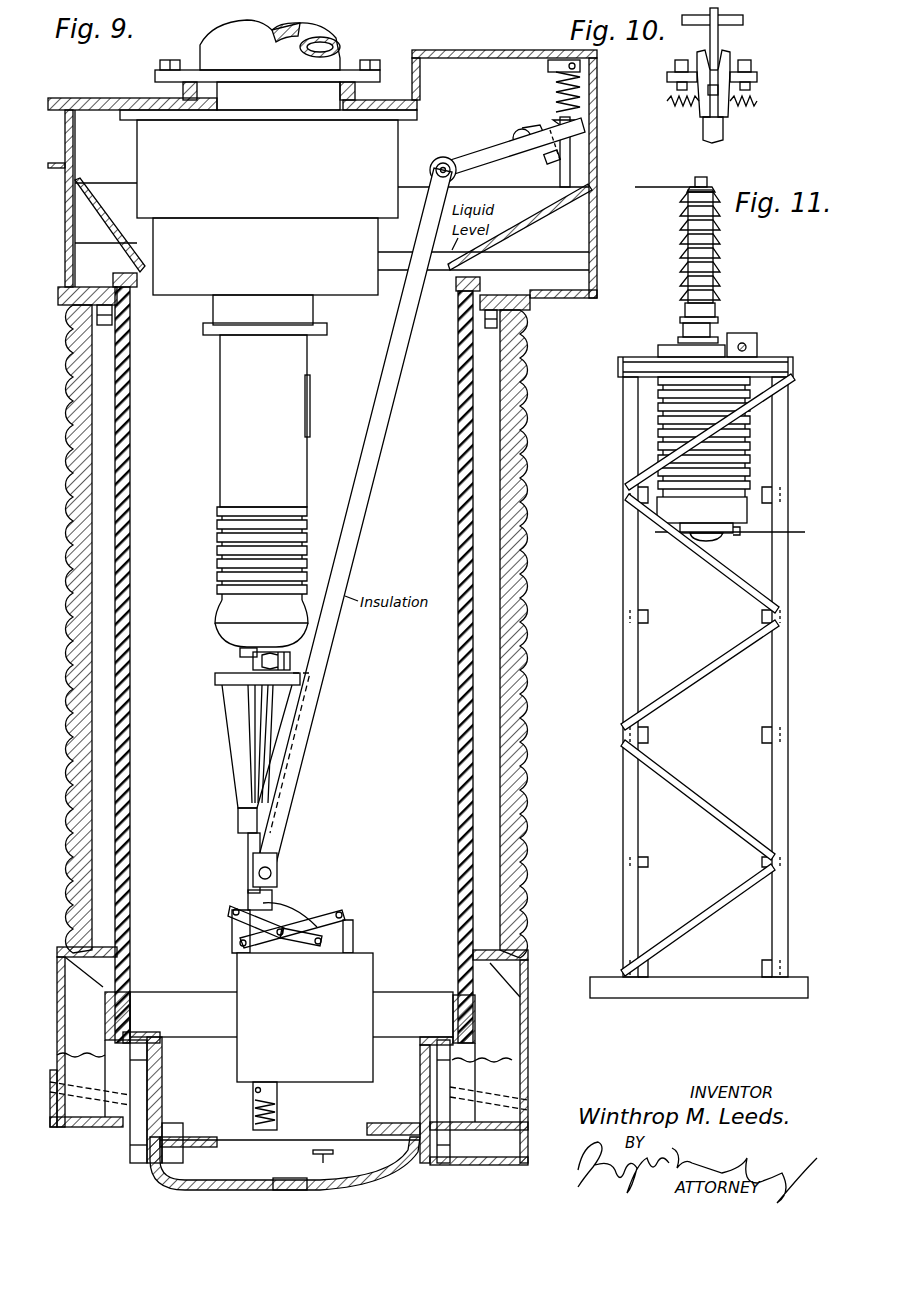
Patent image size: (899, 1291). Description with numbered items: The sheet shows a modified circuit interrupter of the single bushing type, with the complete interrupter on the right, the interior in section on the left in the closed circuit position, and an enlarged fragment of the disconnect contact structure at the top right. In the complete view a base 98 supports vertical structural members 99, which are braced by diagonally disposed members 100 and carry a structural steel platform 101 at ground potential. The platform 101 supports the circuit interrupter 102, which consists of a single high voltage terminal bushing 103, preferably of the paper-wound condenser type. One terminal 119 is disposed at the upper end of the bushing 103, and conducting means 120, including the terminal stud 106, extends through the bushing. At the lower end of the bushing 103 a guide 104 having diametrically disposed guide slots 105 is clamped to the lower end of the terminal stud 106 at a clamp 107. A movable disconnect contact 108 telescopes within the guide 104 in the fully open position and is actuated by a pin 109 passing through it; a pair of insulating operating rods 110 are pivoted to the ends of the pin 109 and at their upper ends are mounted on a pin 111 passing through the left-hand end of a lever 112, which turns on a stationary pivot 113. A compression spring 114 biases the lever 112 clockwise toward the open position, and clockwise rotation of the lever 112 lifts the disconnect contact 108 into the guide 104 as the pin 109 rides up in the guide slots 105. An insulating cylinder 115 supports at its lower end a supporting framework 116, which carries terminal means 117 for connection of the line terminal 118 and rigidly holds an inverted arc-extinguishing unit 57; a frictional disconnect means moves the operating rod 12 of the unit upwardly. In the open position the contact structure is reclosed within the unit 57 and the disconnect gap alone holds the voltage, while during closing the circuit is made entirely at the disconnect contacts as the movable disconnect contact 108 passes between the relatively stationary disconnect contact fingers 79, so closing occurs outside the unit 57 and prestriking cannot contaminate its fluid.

In FIG. 9, the platform 101 is at (118, 90).
In FIG. 11, the platform 101 is at (645, 350).
In FIG. 9, the circuit interrupter 102 is at (232, 33).
In FIG. 11, the circuit interrupter 102 is at (722, 345).
In FIG. 9, the high voltage terminal bushing 103 is at (340, 50).
In FIG. 11, the high voltage terminal bushing 103 is at (680, 300).
In FIG. 9, the guide 104 is at (230, 748).
In FIG. 9, the guide slots 105 is at (267, 753).
In FIG. 9, the terminal stud 106 is at (238, 652).
In FIG. 9, the clamp 107 is at (253, 662).
In FIG. 9, the movable disconnect contact 108 is at (248, 857).
In FIG. 10, the movable disconnect contact 108 is at (720, 42).
In FIG. 9, the pin 109 is at (280, 870).
In FIG. 10, the pin 109 is at (745, 20).
In FIG. 9, the insulating operating rods 110 is at (377, 471).
In FIG. 9, the pin 111 is at (443, 162).
In FIG. 9, the lever 112 is at (495, 143).
In FIG. 9, the stationary pivot 113 is at (535, 123).
In FIG. 11, the stationary pivot 113 is at (757, 345).
In FIG. 9, the compression spring 114 is at (553, 85).
In FIG. 9, the insulating cylinder 115 is at (132, 568).
In FIG. 9, the supporting framework 116 is at (123, 1130).
In FIG. 11, the supporting framework 116 is at (708, 541).
In FIG. 11, the terminal means 117 is at (738, 537).
In FIG. 11, the line terminal 118 is at (794, 532).
In FIG. 11, the terminal 119 is at (708, 183).
In FIG. 9, the conducting means 120 is at (183, 438).
In FIG. 9, the operating rod 12 is at (245, 945).
In FIG. 10, the operating rod 12 is at (725, 130).
In FIG. 9, the arc-extinguishing unit 57 is at (308, 1028).
In FIG. 10, the stationary disconnect contact fingers 79 is at (697, 57).
In FIG. 11, the base 98 is at (705, 977).
In FIG. 11, the vertical structural members 99 is at (623, 800).
In FIG. 11, the diagonally disposed members 100 is at (710, 572).